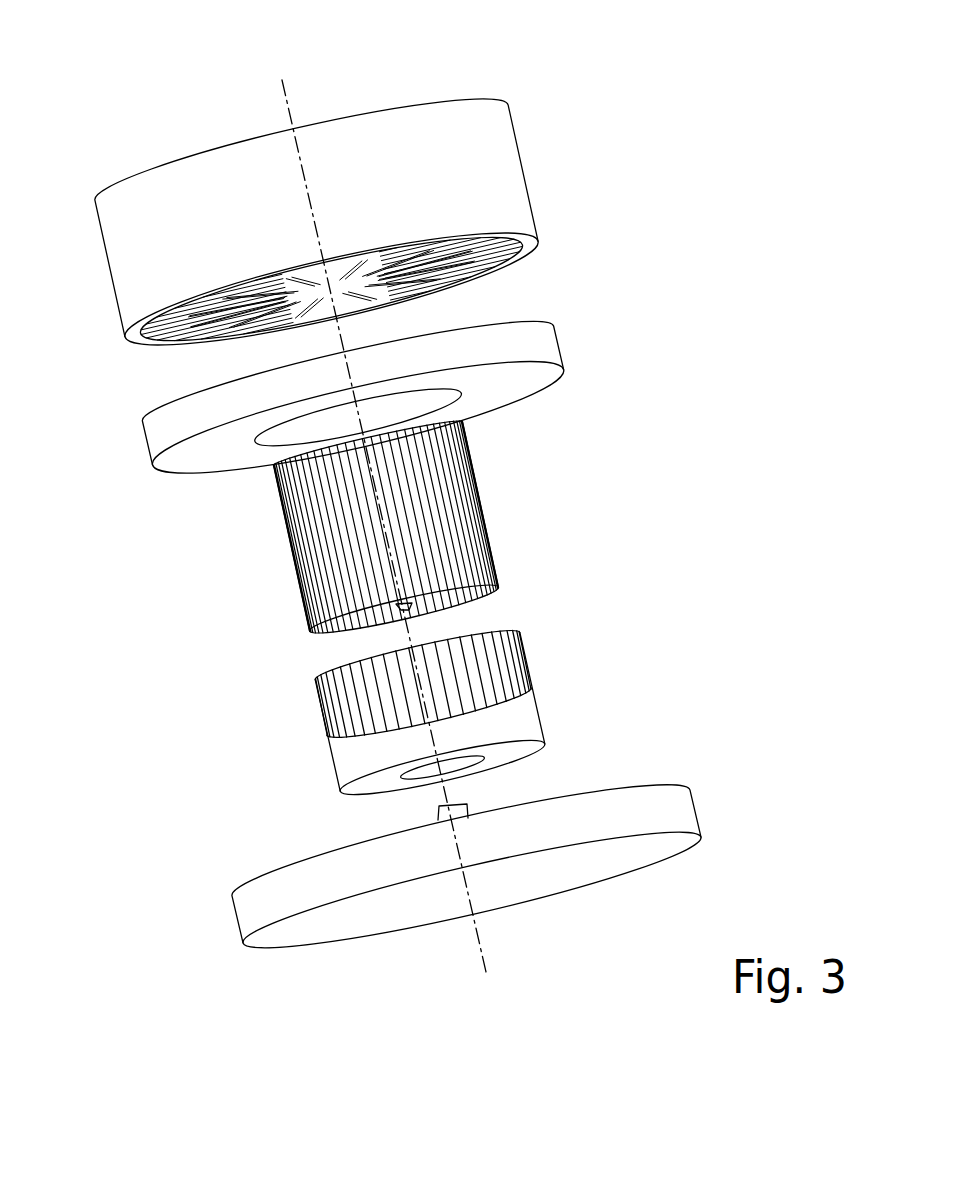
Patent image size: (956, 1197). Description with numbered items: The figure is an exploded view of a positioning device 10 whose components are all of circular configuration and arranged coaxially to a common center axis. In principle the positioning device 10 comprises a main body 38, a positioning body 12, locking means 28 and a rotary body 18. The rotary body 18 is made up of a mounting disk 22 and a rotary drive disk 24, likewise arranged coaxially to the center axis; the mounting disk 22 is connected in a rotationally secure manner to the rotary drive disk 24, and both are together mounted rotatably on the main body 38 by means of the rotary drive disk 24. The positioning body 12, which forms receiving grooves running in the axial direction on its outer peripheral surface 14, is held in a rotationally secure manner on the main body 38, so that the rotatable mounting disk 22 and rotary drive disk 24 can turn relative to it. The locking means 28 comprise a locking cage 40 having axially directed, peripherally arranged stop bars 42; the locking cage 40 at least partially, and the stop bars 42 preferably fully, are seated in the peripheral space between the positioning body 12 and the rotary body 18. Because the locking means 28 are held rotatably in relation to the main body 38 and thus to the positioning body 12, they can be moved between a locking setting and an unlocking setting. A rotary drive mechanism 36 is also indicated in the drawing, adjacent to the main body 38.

The positioning device 10 is at (200, 106).
The positioning body 12 is at (462, 497).
The outer peripheral surface 14 is at (497, 571).
The rotary body 18 is at (76, 192).
The mounting disk 22 is at (506, 173).
The rotary drive disk 24 is at (547, 345).
The locking means 28 is at (293, 708).
The rotary drive mechanism 36 is at (353, 815).
The main body 38 is at (247, 906).
The locking cage 40 is at (516, 722).
The stop bar 42 is at (520, 651).